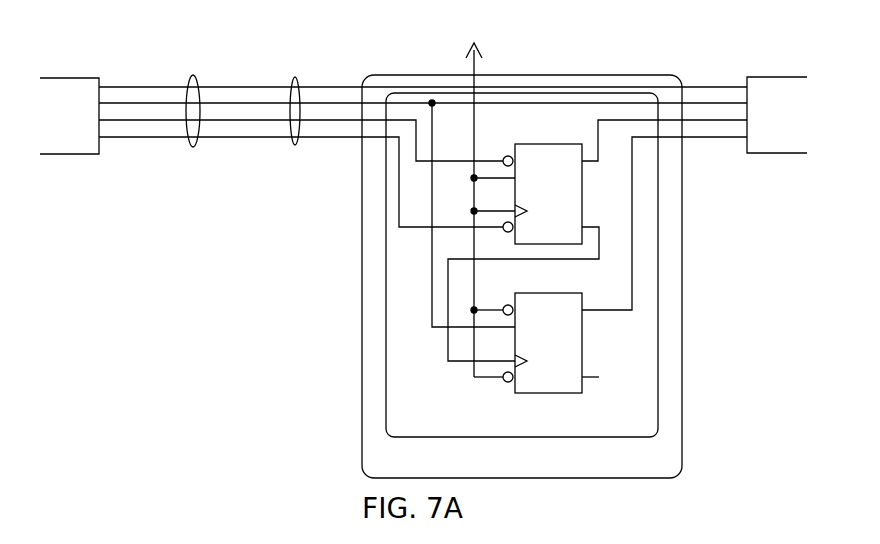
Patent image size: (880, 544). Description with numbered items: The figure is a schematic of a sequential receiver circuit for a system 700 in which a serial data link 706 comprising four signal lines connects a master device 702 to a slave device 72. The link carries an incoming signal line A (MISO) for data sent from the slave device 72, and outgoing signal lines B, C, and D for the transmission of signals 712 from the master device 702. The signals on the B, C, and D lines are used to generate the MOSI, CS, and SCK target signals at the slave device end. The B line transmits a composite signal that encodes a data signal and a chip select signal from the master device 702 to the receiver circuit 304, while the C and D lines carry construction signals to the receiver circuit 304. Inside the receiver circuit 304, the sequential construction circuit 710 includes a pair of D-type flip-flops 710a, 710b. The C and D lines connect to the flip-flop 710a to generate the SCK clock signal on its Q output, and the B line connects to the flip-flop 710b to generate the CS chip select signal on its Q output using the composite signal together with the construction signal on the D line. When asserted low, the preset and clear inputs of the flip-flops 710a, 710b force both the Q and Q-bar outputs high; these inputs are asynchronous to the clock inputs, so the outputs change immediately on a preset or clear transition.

The system 700 is at (237, 272).
The master device 702 is at (83, 77).
The serial data link 706 is at (194, 75).
The signals 712 is at (295, 146).
The slave device 72 is at (760, 77).
The receiver circuit 304 is at (661, 471).
The sequential construction circuit 710 is at (637, 429).
The flip-flop 710a is at (574, 144).
The flip-flop 710b is at (575, 293).